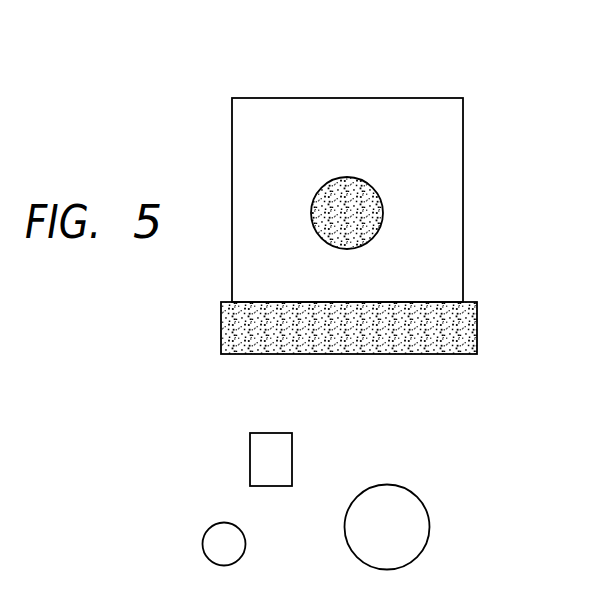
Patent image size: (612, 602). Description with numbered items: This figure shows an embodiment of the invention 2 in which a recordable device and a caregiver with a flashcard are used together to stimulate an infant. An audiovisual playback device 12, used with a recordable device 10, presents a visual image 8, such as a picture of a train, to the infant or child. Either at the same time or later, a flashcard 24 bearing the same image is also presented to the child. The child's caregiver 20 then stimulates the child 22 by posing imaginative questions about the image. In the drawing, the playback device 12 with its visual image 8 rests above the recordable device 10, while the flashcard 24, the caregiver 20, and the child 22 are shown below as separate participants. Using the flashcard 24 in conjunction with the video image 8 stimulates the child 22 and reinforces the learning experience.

The invention 2 is at (481, 93).
The visual image 8 is at (347, 177).
The recordable device 10 is at (477, 330).
The audiovisual playback device 12 is at (232, 202).
The caregiver 20 is at (429, 527).
The child 22 is at (203, 544).
The flashcard 24 is at (249, 459).